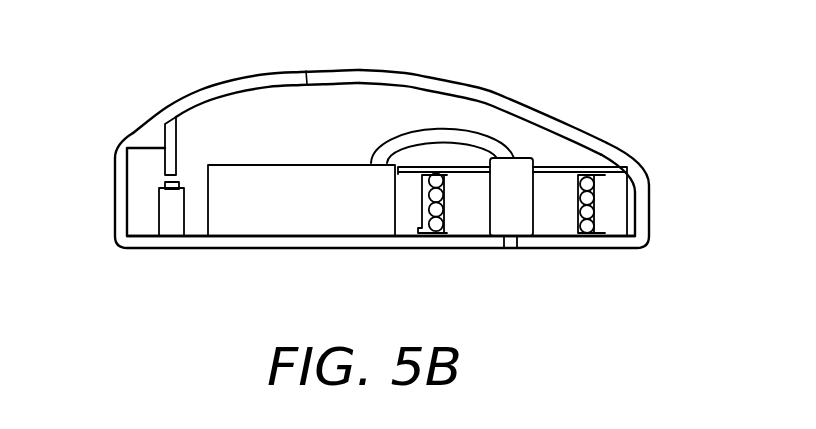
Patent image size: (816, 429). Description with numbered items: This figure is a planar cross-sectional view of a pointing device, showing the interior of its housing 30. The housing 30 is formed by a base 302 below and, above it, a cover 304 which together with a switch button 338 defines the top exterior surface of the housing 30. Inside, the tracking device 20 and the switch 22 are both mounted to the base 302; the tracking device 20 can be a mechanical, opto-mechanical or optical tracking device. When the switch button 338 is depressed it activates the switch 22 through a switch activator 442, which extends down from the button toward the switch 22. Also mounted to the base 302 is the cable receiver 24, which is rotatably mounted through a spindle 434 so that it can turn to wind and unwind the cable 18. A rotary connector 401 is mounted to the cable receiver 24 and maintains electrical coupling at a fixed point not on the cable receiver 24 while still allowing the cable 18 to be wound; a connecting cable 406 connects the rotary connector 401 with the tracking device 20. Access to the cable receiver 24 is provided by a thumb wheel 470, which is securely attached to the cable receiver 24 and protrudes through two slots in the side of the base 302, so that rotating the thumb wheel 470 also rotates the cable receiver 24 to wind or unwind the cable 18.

The housing 30 is at (163, 76).
The switch button 338 is at (238, 83).
The cover 304 is at (405, 73).
The base 302 is at (380, 248).
The switch activator 442 is at (165, 148).
The switch 22 is at (173, 215).
The tracking device 20 is at (301, 224).
The connecting cable 406 is at (462, 127).
The thumb wheel 470 is at (427, 172).
The rotary connector 401 is at (523, 157).
The spindle 434 is at (518, 241).
The cable receiver 24 is at (562, 225).
The cable 18 is at (592, 210).